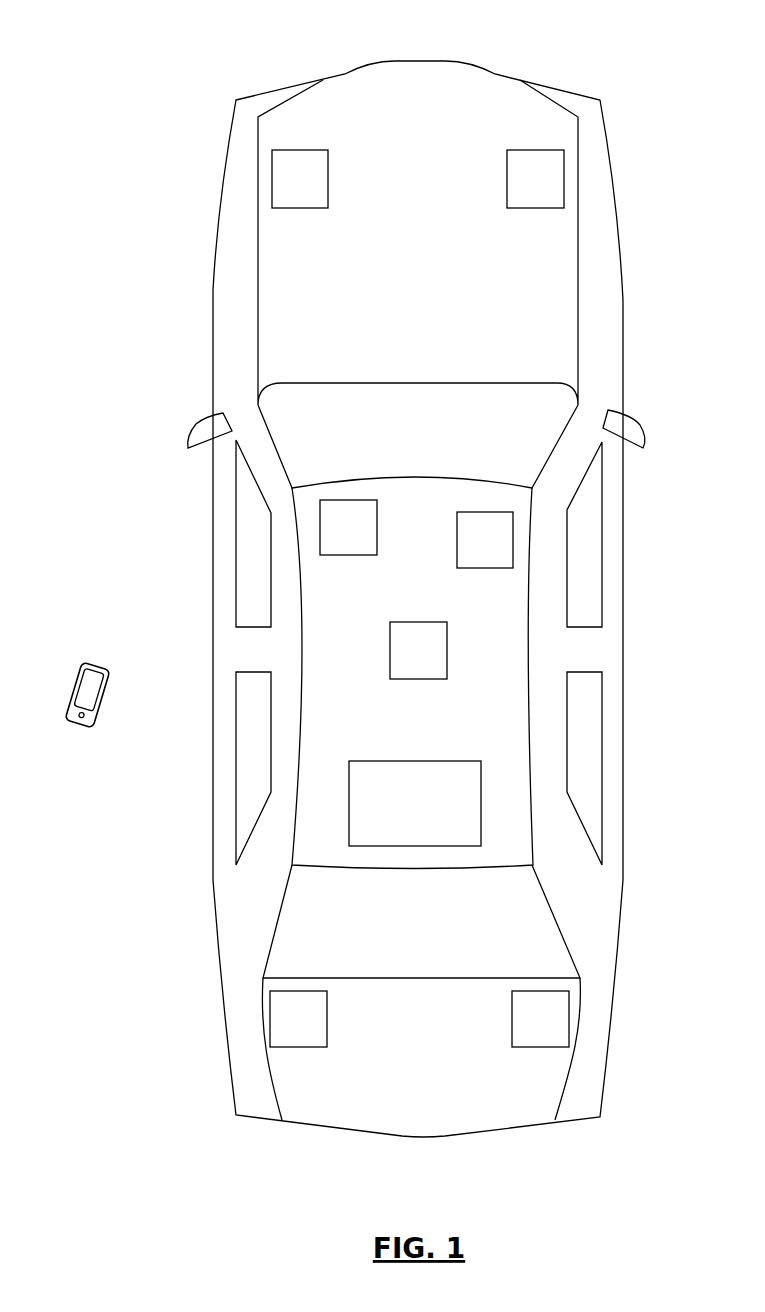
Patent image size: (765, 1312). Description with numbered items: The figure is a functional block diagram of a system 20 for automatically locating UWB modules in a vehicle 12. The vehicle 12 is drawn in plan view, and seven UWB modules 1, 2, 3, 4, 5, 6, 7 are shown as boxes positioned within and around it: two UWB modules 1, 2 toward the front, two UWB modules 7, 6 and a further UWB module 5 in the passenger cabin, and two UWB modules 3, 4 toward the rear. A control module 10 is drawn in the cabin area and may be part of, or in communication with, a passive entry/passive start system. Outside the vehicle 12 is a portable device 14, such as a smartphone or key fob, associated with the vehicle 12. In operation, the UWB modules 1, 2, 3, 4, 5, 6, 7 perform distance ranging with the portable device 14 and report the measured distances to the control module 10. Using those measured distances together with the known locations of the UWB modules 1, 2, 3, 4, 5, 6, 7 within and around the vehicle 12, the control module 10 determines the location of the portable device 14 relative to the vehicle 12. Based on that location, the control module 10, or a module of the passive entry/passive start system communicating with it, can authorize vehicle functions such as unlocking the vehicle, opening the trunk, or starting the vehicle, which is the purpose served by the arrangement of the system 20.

The UWB module 1 is at (300, 179).
The UWB module 2 is at (535, 179).
The UWB module 3 is at (298, 1019).
The UWB module 4 is at (540, 1019).
The UWB module 5 is at (418, 650).
The UWB module 6 is at (485, 540).
The UWB module 7 is at (348, 527).
The control module 10 is at (410, 759).
The vehicle 12 is at (617, 238).
The portable device 14 is at (75, 673).
The system 20 is at (112, 68).